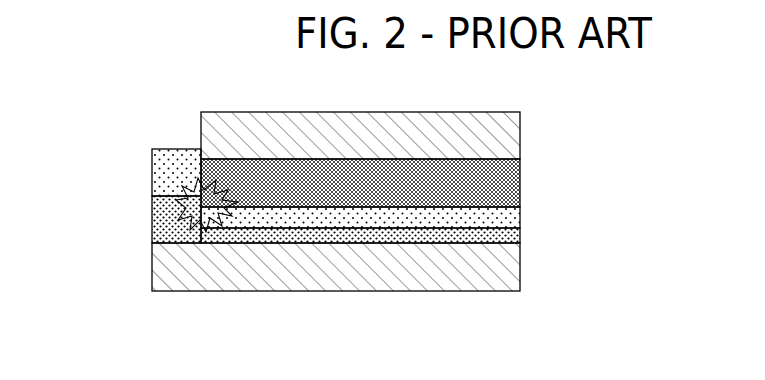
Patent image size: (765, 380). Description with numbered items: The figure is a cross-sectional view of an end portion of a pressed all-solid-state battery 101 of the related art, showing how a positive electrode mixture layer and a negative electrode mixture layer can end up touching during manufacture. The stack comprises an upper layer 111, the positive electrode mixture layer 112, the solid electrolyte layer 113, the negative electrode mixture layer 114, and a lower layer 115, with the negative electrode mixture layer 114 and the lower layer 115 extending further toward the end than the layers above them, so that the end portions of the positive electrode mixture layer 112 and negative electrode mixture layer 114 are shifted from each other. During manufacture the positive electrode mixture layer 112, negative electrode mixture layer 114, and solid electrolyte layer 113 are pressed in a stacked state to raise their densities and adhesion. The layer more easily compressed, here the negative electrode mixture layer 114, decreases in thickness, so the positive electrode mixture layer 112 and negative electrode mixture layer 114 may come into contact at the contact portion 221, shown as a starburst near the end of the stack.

The all-solid-state battery 101 is at (132, 113).
The first layer 111 is at (520, 136).
The positive electrode mixture layer 112 is at (520, 180).
The solid electrolyte layer 113 is at (520, 215).
The negative electrode mixture layer 114 is at (520, 237).
The substrate layer 115 is at (520, 273).
The contact portion 221 is at (205, 214).